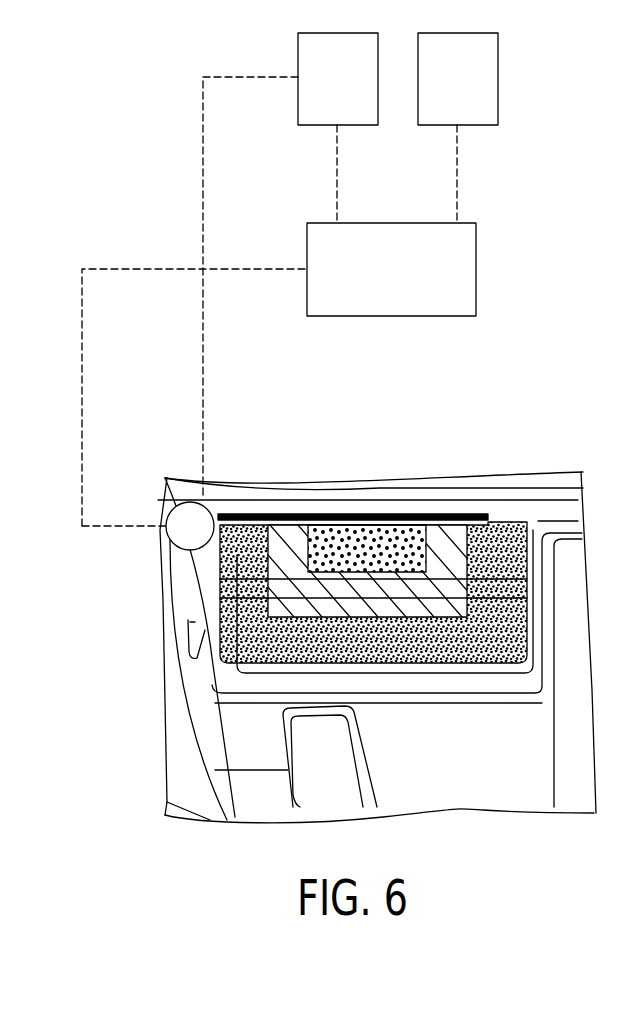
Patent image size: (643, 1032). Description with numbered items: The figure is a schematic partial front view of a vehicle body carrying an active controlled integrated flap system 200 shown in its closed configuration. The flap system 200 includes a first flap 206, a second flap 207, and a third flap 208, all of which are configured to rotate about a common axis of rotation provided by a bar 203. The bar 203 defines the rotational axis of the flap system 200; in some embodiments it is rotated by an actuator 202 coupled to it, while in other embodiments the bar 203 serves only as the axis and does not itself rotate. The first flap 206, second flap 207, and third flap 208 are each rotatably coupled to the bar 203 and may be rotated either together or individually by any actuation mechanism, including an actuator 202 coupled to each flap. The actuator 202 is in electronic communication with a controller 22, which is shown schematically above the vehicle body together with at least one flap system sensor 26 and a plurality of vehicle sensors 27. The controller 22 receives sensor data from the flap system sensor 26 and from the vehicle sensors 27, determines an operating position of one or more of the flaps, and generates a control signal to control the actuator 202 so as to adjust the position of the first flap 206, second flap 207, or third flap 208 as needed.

The flap system 200 is at (132, 168).
The flap system sensor 26 is at (348, 94).
The vehicle sensors 27 is at (468, 94).
The controller 22 is at (403, 280).
The actuator 202 is at (170, 503).
The bar 203 is at (453, 513).
The first flap 206 is at (323, 545).
The second flap 207 is at (455, 602).
The third flap 208 is at (257, 635).